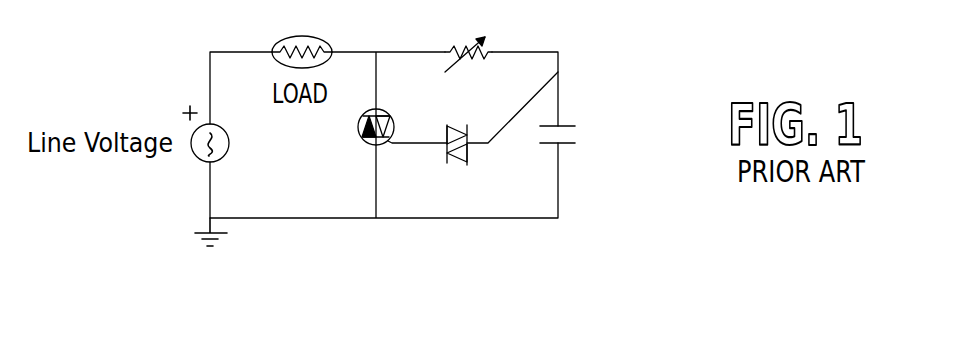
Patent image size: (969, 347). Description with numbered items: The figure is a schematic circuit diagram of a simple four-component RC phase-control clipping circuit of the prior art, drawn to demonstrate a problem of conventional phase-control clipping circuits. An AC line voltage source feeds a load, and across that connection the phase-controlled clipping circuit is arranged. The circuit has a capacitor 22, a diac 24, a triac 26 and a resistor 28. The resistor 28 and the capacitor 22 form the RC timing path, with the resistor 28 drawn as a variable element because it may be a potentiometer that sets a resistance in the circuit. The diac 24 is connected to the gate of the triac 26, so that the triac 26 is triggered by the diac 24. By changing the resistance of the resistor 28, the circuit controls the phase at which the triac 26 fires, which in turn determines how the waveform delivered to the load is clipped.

The capacitor 22 is at (567, 145).
The diac 24 is at (457, 164).
The triac 26 is at (362, 139).
The resistor 28 is at (490, 47).